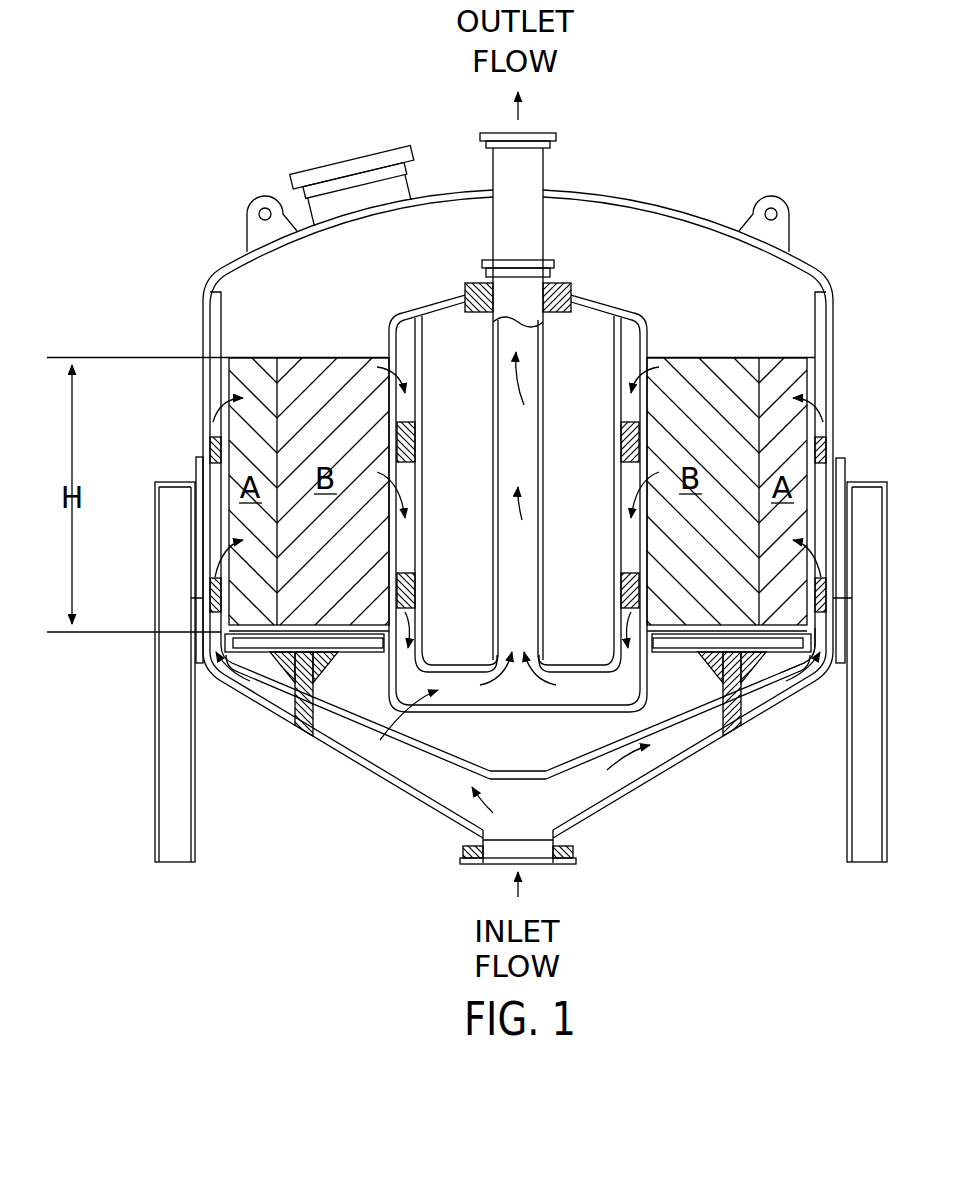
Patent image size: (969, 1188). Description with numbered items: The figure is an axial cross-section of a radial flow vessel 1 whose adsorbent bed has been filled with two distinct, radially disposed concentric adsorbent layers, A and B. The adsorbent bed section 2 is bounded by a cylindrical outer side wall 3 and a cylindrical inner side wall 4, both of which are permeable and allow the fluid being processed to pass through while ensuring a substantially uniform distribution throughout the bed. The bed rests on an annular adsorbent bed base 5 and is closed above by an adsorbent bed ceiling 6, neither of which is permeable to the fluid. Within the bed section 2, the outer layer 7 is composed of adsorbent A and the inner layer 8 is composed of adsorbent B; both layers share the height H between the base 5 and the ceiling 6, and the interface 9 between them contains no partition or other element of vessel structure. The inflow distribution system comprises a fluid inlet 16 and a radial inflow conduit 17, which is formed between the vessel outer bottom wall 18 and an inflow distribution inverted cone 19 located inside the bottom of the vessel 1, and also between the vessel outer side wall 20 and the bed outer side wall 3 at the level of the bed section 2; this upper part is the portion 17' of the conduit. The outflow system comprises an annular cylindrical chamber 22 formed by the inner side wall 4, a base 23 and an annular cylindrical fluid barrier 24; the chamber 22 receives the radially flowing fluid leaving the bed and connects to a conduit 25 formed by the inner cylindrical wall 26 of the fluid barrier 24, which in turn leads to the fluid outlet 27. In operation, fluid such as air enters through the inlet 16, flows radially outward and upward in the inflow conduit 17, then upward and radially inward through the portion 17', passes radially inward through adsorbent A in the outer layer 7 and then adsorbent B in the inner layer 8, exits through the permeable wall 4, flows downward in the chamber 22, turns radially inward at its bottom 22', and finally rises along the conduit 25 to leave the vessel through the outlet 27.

The radial flow vessel 1 is at (657, 198).
The adsorbent bed section 2 is at (255, 348).
The outer side wall 3 is at (235, 397).
The inner side wall 4 is at (391, 412).
The adsorbent bed base 5 is at (340, 618).
The adsorbent bed ceiling 6 is at (311, 357).
The outer layer 7 is at (247, 435).
The inner layer 8 is at (389, 549).
The interface 9 is at (759, 563).
The fluid inlet 16 is at (540, 858).
The radial inflow conduit 17 is at (518, 745).
The portion of conduit 17' is at (855, 634).
The vessel outer bottom wall 18 is at (712, 743).
The inflow distribution inverted cone 19 is at (664, 722).
The vessel outer side wall 20 is at (830, 416).
The annular cylindrical chamber 22 is at (484, 540).
The bottom of chamber 22' is at (518, 723).
The base 23 is at (575, 713).
The annular cylindrical fluid barrier 24 is at (443, 663).
The conduit 25 is at (527, 229).
The inner cylindrical wall 26 is at (540, 470).
The fluid outlet 27 is at (530, 139).